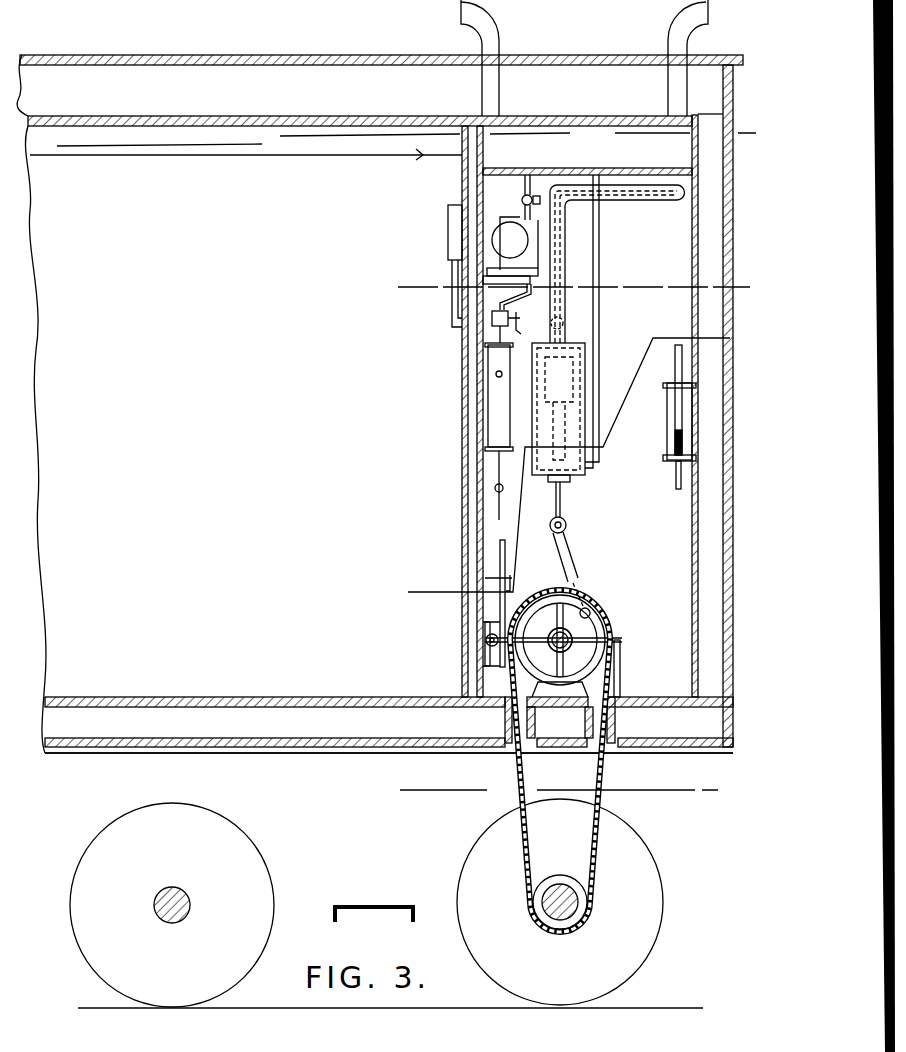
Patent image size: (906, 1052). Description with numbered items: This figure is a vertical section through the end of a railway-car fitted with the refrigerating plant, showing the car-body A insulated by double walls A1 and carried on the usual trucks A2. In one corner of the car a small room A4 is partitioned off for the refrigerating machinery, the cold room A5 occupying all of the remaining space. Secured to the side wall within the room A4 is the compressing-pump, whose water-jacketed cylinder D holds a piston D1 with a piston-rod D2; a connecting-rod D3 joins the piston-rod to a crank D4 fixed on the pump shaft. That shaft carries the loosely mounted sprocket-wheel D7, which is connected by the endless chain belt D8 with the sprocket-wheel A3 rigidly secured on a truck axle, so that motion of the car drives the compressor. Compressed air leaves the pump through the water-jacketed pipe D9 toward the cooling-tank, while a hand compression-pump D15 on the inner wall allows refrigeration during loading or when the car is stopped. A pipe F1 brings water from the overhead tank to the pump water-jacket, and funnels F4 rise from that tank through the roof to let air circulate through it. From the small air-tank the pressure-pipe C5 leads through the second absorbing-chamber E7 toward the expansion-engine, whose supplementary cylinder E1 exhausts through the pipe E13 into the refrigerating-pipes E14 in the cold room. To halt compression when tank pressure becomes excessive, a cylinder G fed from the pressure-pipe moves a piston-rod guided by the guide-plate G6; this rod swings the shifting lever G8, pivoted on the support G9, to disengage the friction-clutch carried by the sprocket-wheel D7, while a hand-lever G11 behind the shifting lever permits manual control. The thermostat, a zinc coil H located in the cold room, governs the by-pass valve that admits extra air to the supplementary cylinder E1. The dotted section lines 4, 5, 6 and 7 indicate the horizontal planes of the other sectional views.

The funnels F4 is at (724, 18).
The double walls A1 is at (389, 417).
The section line 7- 7 is at (414, 141).
The refrigerating-pipes E14 is at (318, 152).
The exhaust pipe E13 is at (515, 197).
The supplementary cylinder E1 is at (510, 250).
The pipe D9 is at (641, 197).
The zinc coil H is at (449, 236).
The section line 6- 6 is at (375, 272).
The pressure-pipe C5 is at (527, 313).
The pipe F1 is at (604, 321).
The section line 5- 5 is at (743, 322).
The piston D1 is at (565, 393).
The water-jacketed cylinder D is at (559, 408).
The second absorbing-chamber E7 is at (497, 400).
The hand compression-pump D15 is at (676, 418).
The cold room A5 is at (282, 436).
The small room A4 is at (654, 529).
The car-body A is at (248, 591).
The piston-rod D2 is at (562, 503).
The connecting-rod D3 is at (568, 552).
The crank D4 is at (592, 617).
The hand-lever G11 is at (506, 571).
The sprocket-wheel D7 is at (544, 598).
The shifting lever G8 is at (560, 650).
The cylinder G is at (552, 638).
The guide-plate G6 is at (571, 650).
The support G9 is at (626, 657).
The endless chain belt D8 is at (604, 776).
The section line 4- 4 is at (555, 793).
The trucks A2 is at (430, 872).
The sprocket-wheel A3 is at (583, 902).